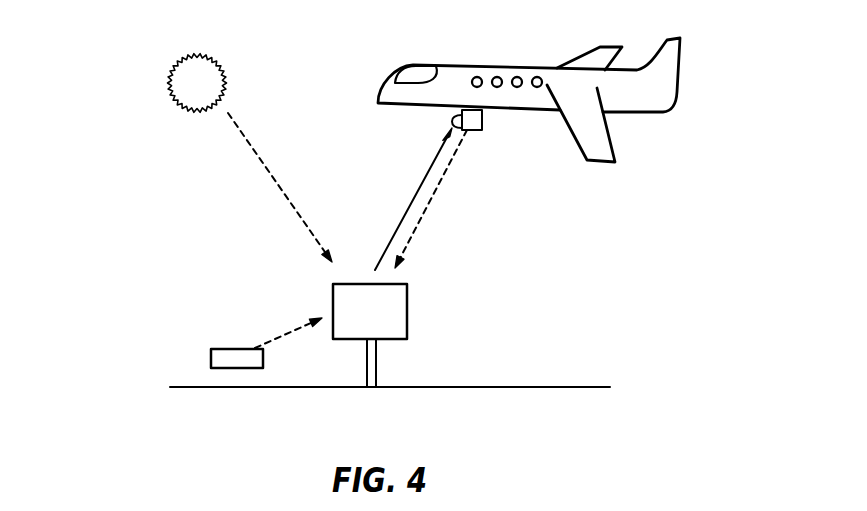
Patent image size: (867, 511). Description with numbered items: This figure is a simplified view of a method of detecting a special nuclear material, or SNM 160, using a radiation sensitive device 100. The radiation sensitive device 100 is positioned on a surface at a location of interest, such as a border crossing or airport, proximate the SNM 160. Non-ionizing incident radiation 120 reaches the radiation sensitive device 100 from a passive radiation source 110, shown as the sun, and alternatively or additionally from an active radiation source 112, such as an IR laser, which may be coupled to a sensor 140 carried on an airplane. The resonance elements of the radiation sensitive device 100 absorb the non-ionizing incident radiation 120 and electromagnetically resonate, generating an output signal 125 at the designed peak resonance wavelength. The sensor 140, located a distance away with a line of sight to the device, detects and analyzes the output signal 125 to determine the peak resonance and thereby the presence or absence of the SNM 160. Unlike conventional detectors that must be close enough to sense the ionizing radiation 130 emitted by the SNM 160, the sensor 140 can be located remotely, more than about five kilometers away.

The radiation sensitive device 100 is at (408, 308).
The passive radiation source 110 is at (190, 85).
The active radiation source 112 is at (477, 128).
The non-ionizing incident radiation 120 is at (272, 173).
The output signal 125 is at (420, 182).
The ionizing radiation 130 is at (273, 340).
The sensor 140 is at (457, 120).
The special nuclear material 160 is at (211, 358).